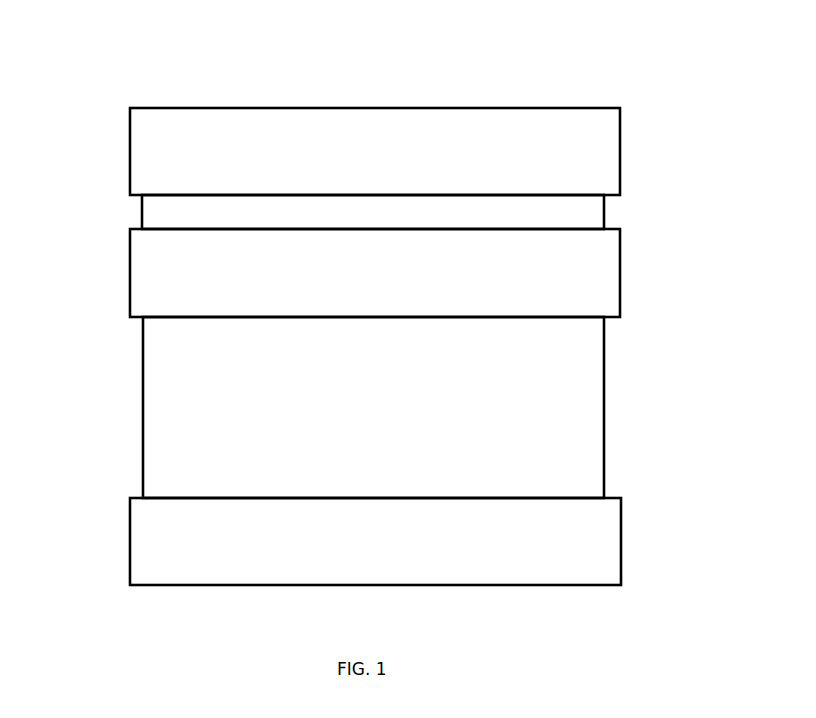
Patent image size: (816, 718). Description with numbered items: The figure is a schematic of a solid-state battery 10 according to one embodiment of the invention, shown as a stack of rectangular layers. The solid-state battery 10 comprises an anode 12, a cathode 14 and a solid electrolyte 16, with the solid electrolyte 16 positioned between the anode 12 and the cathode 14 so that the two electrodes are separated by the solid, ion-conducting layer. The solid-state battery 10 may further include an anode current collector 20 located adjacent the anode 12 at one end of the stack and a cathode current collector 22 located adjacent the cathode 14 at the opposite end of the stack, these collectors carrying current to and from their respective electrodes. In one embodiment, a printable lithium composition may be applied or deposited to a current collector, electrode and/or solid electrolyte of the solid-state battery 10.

The solid-state battery 10 is at (80, 63).
The anode 12 is at (587, 213).
The cathode 14 is at (563, 437).
The solid electrolyte 16 is at (582, 291).
The anode current collector 20 is at (577, 138).
The cathode current collector 22 is at (580, 548).